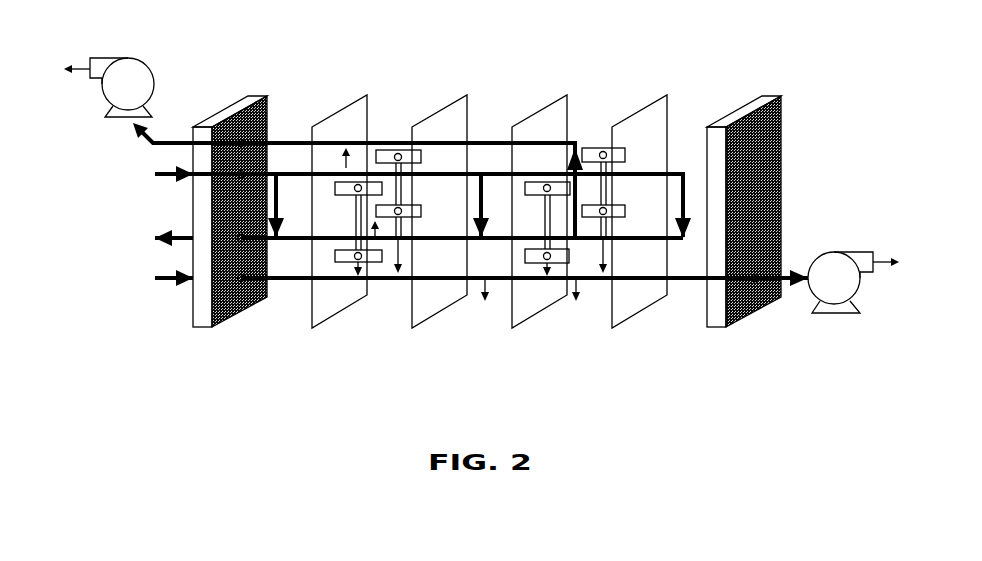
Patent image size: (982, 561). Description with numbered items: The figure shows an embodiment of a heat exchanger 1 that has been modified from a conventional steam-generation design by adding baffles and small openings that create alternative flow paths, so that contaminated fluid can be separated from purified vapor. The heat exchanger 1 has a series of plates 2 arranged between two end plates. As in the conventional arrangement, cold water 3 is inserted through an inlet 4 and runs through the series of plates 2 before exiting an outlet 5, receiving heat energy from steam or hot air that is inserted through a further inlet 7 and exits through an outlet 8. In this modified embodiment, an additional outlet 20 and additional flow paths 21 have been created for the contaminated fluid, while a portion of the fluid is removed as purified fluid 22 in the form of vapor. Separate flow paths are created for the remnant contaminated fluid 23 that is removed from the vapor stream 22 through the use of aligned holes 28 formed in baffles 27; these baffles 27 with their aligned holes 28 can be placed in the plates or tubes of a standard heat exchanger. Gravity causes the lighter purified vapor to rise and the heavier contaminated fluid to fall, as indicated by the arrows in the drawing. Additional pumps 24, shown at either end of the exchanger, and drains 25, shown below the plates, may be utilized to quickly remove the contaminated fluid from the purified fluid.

The heat exchanger 1 is at (767, 52).
The plates 2 is at (345, 312).
The cold water 3 is at (380, 283).
The inlet 4 is at (242, 282).
The outlet 5 is at (244, 143).
The inlet 7 is at (244, 173).
The outlet 8 is at (243, 241).
The additional outlet 20 is at (757, 282).
The flow paths 21 is at (690, 283).
The purified fluid 22 is at (350, 158).
The remnant contaminated fluid 23 is at (356, 226).
The pumps 24 is at (129, 58).
The drains 25 is at (489, 292).
The baffles 27 is at (335, 190).
The aligned holes 28 is at (355, 187).